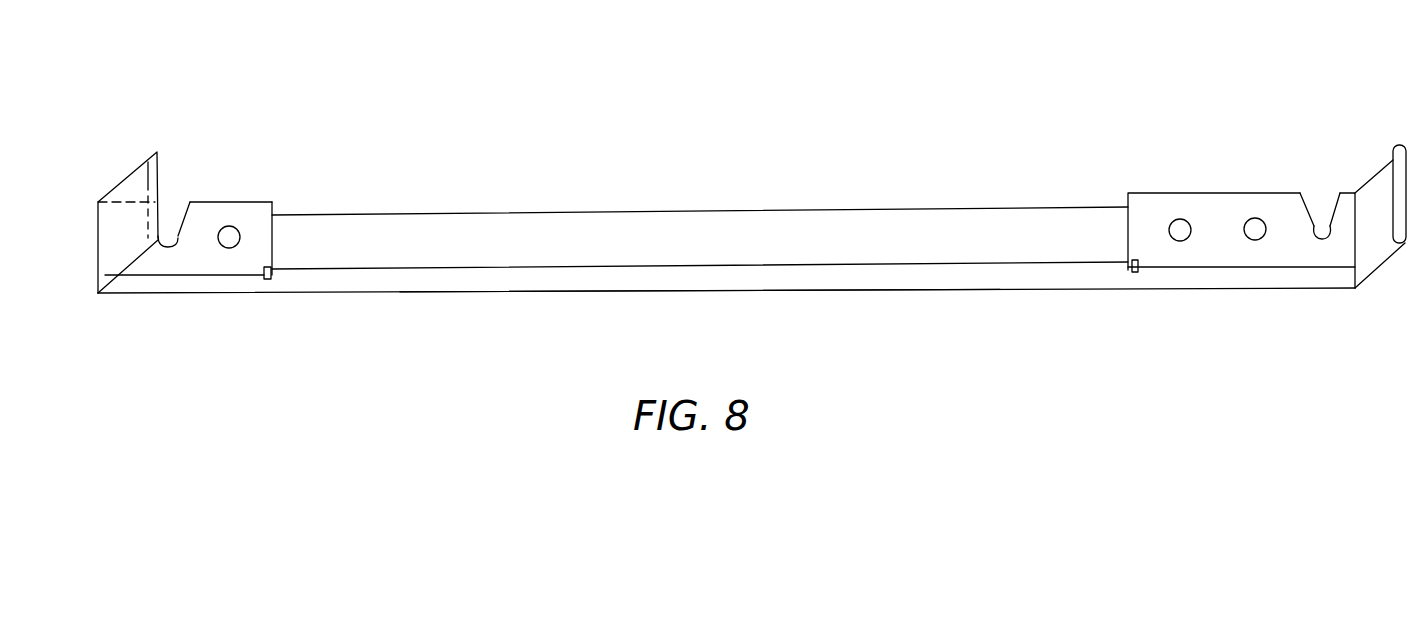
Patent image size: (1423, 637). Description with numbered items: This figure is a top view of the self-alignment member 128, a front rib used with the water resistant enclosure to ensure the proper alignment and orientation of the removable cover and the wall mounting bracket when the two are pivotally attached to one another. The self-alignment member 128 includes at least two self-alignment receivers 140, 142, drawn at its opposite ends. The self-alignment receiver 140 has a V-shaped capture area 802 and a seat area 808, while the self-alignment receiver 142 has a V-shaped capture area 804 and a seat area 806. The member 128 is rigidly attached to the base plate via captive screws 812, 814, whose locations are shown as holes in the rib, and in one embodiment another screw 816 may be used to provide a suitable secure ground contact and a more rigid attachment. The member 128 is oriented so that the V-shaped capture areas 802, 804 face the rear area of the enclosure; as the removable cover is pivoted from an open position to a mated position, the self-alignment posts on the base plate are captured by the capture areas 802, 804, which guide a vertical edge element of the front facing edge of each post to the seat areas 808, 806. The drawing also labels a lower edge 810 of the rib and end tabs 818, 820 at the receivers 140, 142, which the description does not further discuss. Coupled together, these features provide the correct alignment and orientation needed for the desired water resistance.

The self-alignment member 128 is at (873, 161).
The self-alignment receiver 140 is at (1248, 99).
The self-alignment receiver 142 is at (121, 141).
The V-shaped capture area 802 is at (1319, 203).
The V-shaped capture area 804 is at (176, 211).
The seat area 806 is at (174, 245).
The seat area 808 is at (1321, 238).
The bottom edge 810 is at (763, 292).
The captive screw 812 is at (237, 227).
The captive screw 814 is at (1178, 219).
The screw 816 is at (1254, 217).
The right end tab 818 is at (1398, 147).
The left end tab 820 is at (158, 165).